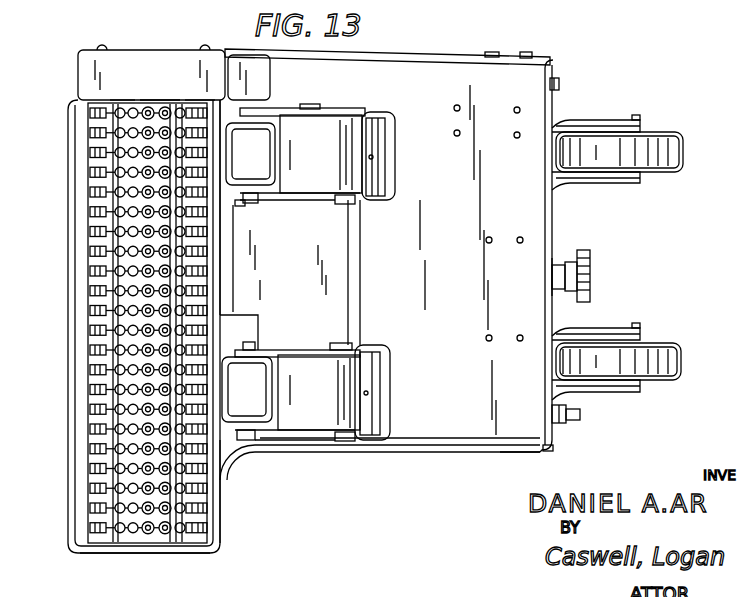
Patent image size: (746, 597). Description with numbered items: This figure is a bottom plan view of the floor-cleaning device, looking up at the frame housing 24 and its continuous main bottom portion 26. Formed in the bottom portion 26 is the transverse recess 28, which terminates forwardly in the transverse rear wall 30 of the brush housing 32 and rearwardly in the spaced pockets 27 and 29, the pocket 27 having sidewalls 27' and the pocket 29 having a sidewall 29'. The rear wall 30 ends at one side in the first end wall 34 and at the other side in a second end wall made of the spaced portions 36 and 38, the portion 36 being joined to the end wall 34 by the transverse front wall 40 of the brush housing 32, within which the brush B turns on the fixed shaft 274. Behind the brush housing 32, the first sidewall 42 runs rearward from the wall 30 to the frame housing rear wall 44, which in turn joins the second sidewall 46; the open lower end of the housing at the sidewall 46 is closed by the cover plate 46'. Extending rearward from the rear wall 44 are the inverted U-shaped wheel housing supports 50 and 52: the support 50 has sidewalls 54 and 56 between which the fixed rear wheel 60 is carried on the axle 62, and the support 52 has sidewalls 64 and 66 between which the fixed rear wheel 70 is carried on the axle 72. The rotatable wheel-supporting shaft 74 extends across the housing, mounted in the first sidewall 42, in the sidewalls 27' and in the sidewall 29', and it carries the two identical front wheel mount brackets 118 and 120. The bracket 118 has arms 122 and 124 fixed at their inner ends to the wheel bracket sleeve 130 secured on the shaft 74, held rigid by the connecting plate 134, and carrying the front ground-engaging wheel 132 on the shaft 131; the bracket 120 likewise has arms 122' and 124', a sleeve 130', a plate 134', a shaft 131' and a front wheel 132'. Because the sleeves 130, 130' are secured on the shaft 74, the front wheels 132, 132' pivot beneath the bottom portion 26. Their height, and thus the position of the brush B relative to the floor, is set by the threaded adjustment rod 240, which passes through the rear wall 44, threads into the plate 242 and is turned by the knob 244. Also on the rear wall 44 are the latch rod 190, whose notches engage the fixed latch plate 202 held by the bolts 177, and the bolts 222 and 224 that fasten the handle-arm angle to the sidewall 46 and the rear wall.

The frame housing 24 is at (490, 54).
The continuous main bottom portion 26 is at (471, 260).
The pocket 27 is at (401, 157).
The sidewalls of pocket 27' is at (327, 155).
The transverse recess 28 is at (290, 222).
The pocket 29 is at (398, 393).
The sidewall of pocket 29' is at (335, 400).
The transverse rear wall of brush housing 30 is at (222, 511).
The brush housing 32 is at (70, 262).
The first end wall 34 is at (176, 546).
The wall portion 36 is at (120, 106).
The wall portion 38 is at (197, 99).
The transverse front wall of brush housing 40 is at (86, 298).
The first sidewall 42 is at (413, 454).
The frame housing rear wall 44 is at (556, 212).
The second sidewall 46 is at (387, 43).
The cover plate 46' is at (174, 56).
The wheel housing support 50 is at (645, 322).
The wheel housing support 52 is at (637, 116).
The sidewall of support 54 is at (620, 392).
The sidewall of support 56 is at (605, 330).
The fixed rear ground-engaging wheel 60 is at (682, 362).
The axle 62 is at (616, 392).
The sidewall of support 64 is at (632, 183).
The sidewall of support 66 is at (607, 118).
The fixed rear wheel 70 is at (684, 156).
The axle 72 is at (618, 183).
The rotatable wheel-supporting shaft 74 is at (372, 112).
The front wheel mount bracket 118 is at (297, 446).
The front wheel mount bracket 120 is at (300, 200).
The arm of wheel mount bracket 122 is at (295, 455).
The arm of wheel mount bracket 122' is at (252, 233).
The arm of wheel mount bracket 124 is at (297, 334).
The arm of wheel mount bracket 124' is at (302, 96).
The wheel bracket sleeve 130 is at (405, 393).
The wheel bracket sleeve 130' is at (404, 154).
The shaft 131 is at (237, 330).
The shaft 131' is at (296, 215).
The front ground-engaging wheel 132 is at (247, 389).
The front ground-engaging wheel 132' is at (250, 154).
The connecting plate 134 is at (319, 392).
The connecting plate 134' is at (321, 154).
The bolts 177 is at (516, 452).
The latch rod 190 is at (550, 412).
The fixed latch plate 202 is at (553, 432).
The bolts 222 is at (532, 56).
The bolts 224 is at (562, 84).
The threaded adjustment rod 240 is at (592, 283).
The plate 242 is at (556, 255).
The turning knob 244 is at (585, 262).
The fixed shaft 274 is at (150, 104).
The brush B is at (98, 345).